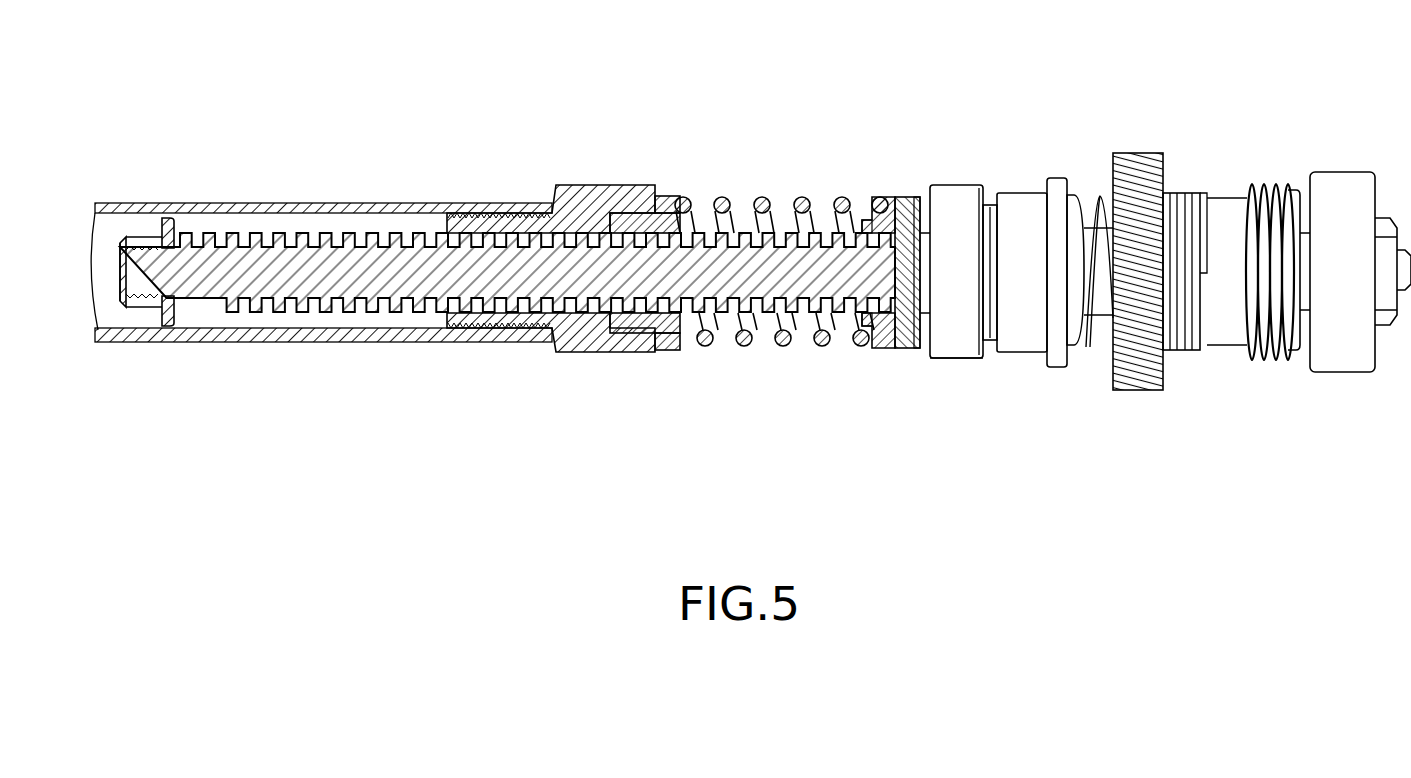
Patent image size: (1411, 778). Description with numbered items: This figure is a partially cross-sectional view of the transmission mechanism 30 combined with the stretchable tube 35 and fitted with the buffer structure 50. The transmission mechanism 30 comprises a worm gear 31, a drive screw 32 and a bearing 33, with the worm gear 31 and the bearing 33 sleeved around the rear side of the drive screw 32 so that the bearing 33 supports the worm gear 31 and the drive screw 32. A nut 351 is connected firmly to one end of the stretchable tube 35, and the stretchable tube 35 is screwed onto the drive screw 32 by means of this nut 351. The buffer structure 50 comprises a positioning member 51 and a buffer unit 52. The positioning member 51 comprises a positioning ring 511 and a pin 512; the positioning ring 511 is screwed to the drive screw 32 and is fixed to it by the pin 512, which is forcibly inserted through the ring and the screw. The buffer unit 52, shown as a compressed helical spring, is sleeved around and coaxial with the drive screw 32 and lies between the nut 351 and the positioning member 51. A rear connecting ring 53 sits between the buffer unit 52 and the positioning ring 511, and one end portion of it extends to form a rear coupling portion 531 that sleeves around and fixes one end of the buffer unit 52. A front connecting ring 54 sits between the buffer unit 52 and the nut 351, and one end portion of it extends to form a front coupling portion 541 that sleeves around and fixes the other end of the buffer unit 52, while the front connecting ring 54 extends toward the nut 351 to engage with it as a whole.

The transmission mechanism 30 is at (426, 200).
The worm gear 31 is at (1132, 375).
The drive screw 32 is at (353, 285).
The bearing 33 is at (965, 345).
The stretchable tube 35 is at (274, 205).
The nut 351 is at (588, 340).
The buffer structure 50 is at (776, 152).
The positioning member 51 is at (996, 229).
The positioning ring 511 is at (885, 200).
The pin 512 is at (912, 200).
The buffer unit 52 is at (762, 203).
The rear connecting ring 53 is at (842, 219).
The rear coupling portion 531 is at (865, 216).
The front connecting ring 54 is at (663, 233).
The front coupling portion 541 is at (694, 208).